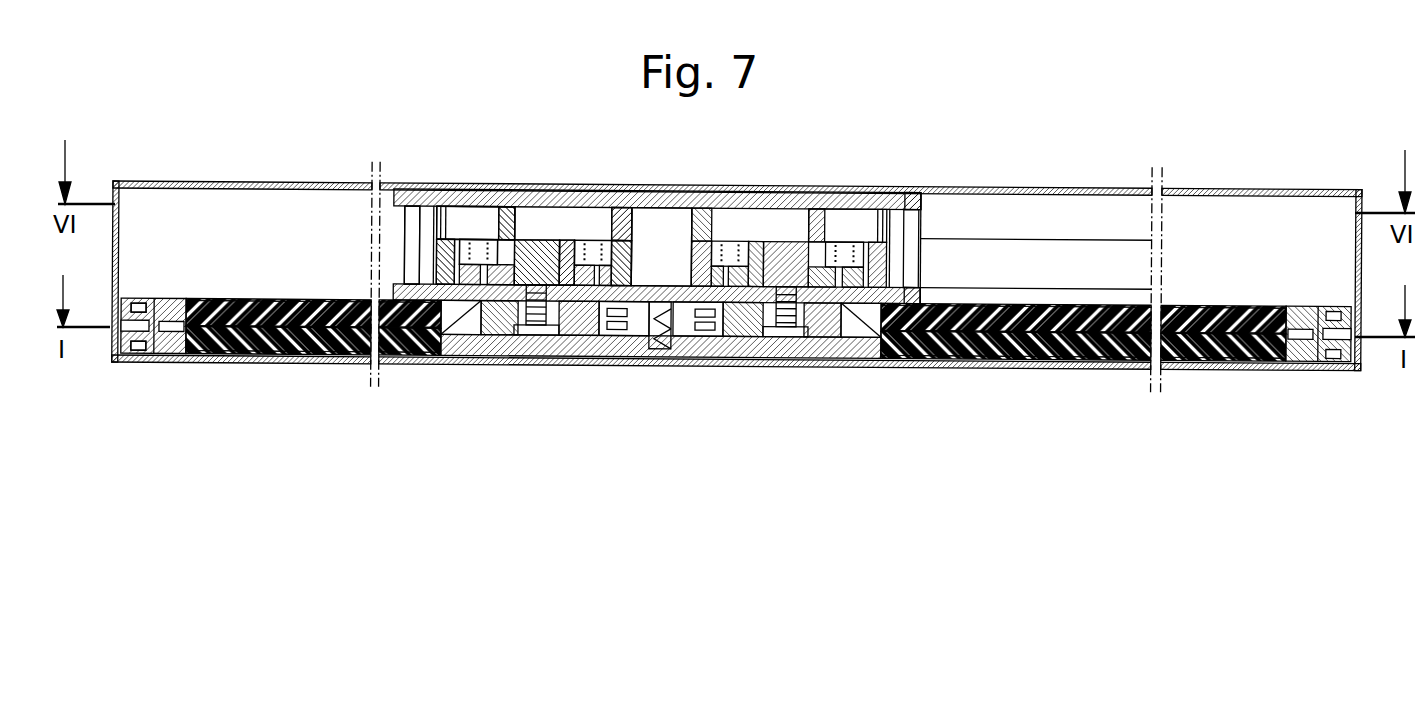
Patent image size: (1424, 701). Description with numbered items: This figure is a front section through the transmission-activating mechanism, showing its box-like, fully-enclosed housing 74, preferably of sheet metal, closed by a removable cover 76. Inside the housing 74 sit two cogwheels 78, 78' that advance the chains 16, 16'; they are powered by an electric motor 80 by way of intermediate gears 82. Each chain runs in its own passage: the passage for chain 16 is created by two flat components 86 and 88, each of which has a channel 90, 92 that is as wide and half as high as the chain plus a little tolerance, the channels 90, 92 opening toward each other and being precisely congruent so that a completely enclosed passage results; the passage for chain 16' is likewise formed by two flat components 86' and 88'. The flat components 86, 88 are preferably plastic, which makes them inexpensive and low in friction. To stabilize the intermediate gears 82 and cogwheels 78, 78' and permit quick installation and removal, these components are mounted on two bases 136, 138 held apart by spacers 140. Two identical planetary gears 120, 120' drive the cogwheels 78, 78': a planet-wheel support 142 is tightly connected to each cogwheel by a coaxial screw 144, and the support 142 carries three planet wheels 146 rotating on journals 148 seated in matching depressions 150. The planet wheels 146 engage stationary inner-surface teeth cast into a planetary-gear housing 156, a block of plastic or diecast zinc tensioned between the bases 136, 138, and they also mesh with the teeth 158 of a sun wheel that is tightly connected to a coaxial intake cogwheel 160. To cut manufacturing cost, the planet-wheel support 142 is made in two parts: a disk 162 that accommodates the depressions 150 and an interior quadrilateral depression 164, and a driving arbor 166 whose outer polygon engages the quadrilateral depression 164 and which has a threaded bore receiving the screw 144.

The housing 74 is at (296, 362).
The removable cover 76 is at (251, 182).
The cogwheel 78 is at (545, 353).
The cogwheel 78' is at (842, 355).
The electric motor 80 is at (1025, 250).
The intermediate gears 82 is at (685, 226).
The flat component 86 is at (313, 364).
The flat component 86' is at (1083, 371).
The flat component 88 is at (313, 286).
The flat component 88' is at (1083, 292).
The channel 90 is at (139, 350).
The channel 92 is at (140, 303).
The chain 16 is at (160, 290).
The chain 16' is at (1318, 306).
The planetary gear 120 is at (630, 211).
The planetary gear 120' is at (838, 245).
The base 136 is at (918, 190).
The base 138 is at (903, 310).
The spacer 140 is at (405, 235).
The planet-wheel support 142 is at (440, 268).
The coaxial screw 144 is at (562, 352).
The planet wheel 146 is at (470, 255).
The journal 148 is at (503, 250).
The depression 150 is at (425, 358).
The planetary-gear housing 156 is at (645, 258).
The teeth 158 is at (531, 258).
The intake cogwheel 160 is at (433, 225).
The disk 162 is at (628, 225).
The quadrilateral depression 164 is at (566, 262).
The driving arbor 166 is at (510, 352).